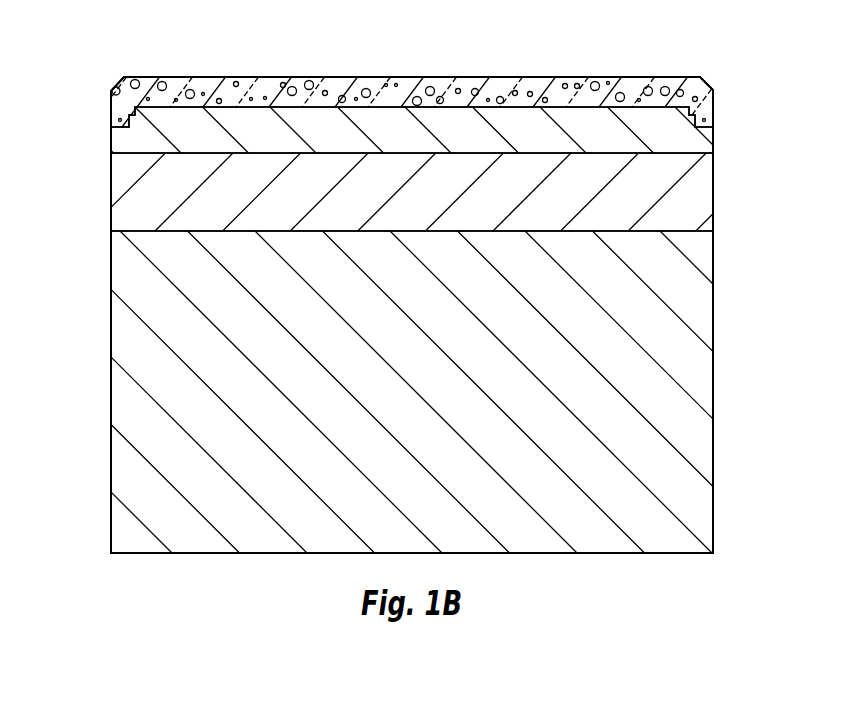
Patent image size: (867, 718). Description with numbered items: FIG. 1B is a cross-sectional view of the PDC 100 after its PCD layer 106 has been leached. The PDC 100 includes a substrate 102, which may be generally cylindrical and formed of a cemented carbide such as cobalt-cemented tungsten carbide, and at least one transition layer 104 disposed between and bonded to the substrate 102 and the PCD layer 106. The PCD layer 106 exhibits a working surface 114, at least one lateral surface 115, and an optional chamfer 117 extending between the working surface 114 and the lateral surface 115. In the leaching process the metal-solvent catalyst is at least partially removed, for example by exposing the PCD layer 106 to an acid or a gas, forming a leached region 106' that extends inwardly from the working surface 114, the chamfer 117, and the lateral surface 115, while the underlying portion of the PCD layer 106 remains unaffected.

The PDC 100 is at (175, 46).
The substrate 102 is at (698, 369).
The transition layer 104 is at (708, 183).
The PCD layer 106 is at (463, 115).
The leached region 106' is at (412, 76).
The working surface 114 is at (513, 80).
The lateral surface 115 is at (112, 153).
The chamfer 117 is at (703, 82).